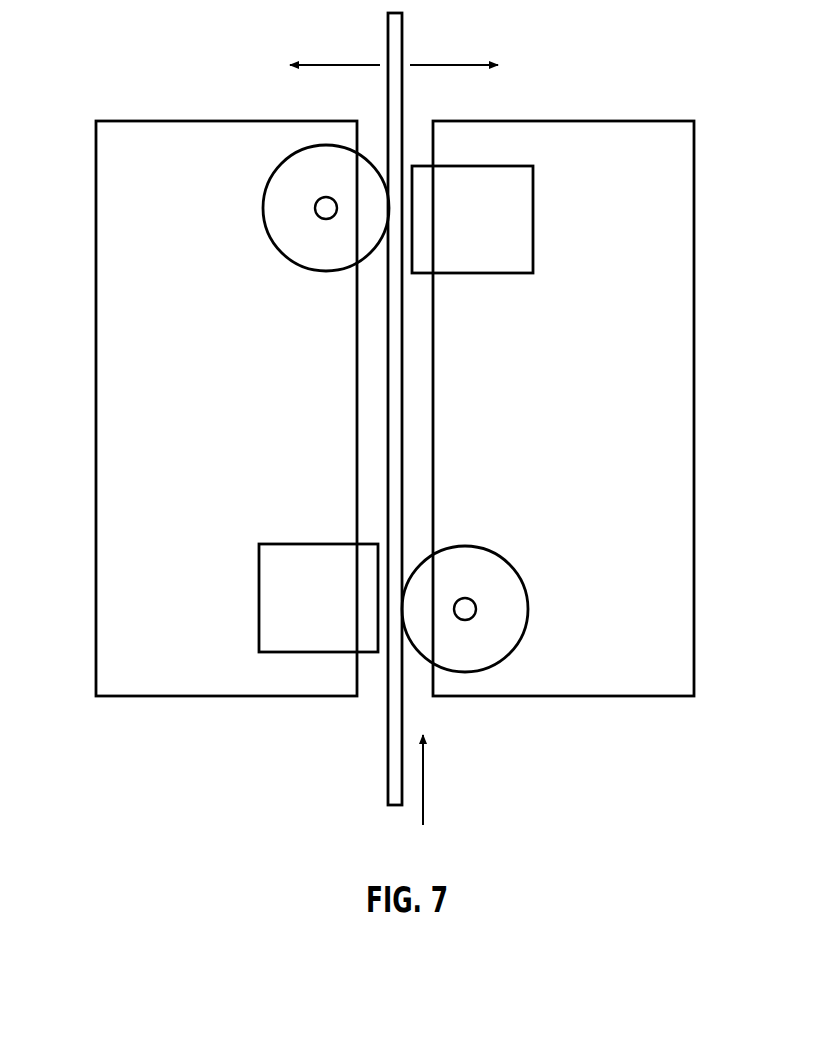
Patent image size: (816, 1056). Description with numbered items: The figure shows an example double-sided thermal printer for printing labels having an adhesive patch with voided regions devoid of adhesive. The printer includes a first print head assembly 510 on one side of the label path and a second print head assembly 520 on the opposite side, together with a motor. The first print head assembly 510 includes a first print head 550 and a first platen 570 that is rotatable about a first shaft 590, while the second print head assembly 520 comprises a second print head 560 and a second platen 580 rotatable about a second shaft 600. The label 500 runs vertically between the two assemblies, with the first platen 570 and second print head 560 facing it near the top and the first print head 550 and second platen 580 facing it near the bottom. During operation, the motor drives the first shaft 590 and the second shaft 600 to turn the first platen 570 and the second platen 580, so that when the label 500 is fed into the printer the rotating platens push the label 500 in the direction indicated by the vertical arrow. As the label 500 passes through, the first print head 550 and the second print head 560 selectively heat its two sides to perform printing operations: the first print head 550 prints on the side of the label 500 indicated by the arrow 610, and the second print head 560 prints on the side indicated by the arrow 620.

The label 500 is at (388, 770).
The first print head assembly 510 is at (96, 350).
The second print head assembly 520 is at (696, 342).
The first print head 550 is at (259, 565).
The second print head 560 is at (534, 190).
The first platen 570 is at (287, 163).
The second platen 580 is at (502, 564).
The first shaft 590 is at (315, 208).
The second shaft 600 is at (478, 606).
The arrow 610 is at (350, 63).
The arrow 620 is at (450, 63).